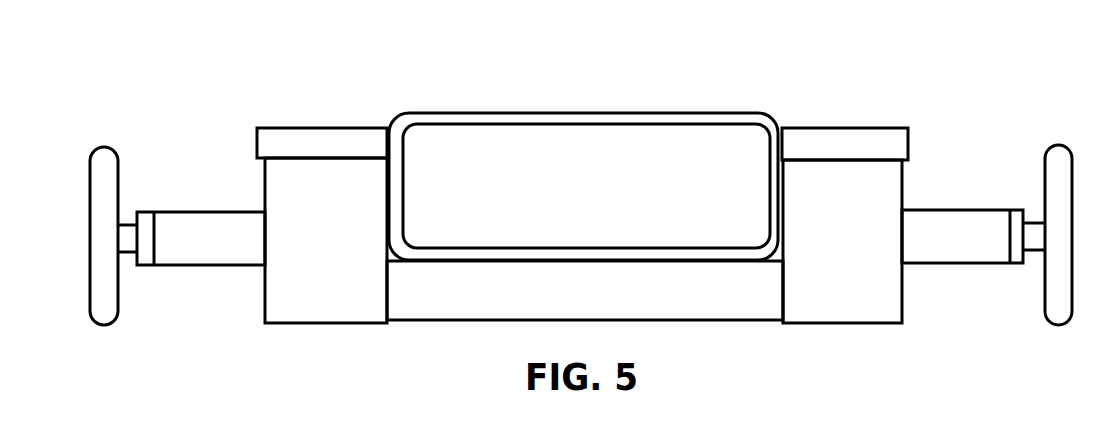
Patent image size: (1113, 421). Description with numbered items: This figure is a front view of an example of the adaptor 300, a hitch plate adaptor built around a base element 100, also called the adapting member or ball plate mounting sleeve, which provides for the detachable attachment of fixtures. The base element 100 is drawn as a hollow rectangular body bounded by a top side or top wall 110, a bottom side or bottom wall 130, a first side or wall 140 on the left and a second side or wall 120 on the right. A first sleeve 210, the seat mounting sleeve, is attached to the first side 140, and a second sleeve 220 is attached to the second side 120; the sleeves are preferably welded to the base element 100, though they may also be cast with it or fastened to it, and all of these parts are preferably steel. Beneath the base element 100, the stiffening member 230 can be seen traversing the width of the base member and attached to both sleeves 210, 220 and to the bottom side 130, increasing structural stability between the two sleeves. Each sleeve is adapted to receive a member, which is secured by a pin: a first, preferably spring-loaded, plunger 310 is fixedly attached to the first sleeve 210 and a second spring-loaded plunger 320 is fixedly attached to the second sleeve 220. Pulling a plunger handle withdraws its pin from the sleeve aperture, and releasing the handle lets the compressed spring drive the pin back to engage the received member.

The base element 100 is at (496, 90).
The top side or top wall 110 is at (555, 125).
The second side or wall 120 is at (768, 200).
The bottom side or bottom wall 130 is at (636, 247).
The first side or wall 140 is at (405, 197).
The first sleeve 210 is at (338, 241).
The second sleeve 220 is at (871, 241).
The stiffening member 230 is at (602, 298).
The adaptor 300 is at (358, 78).
The first plunger 310 is at (191, 188).
The second plunger 320 is at (989, 167).